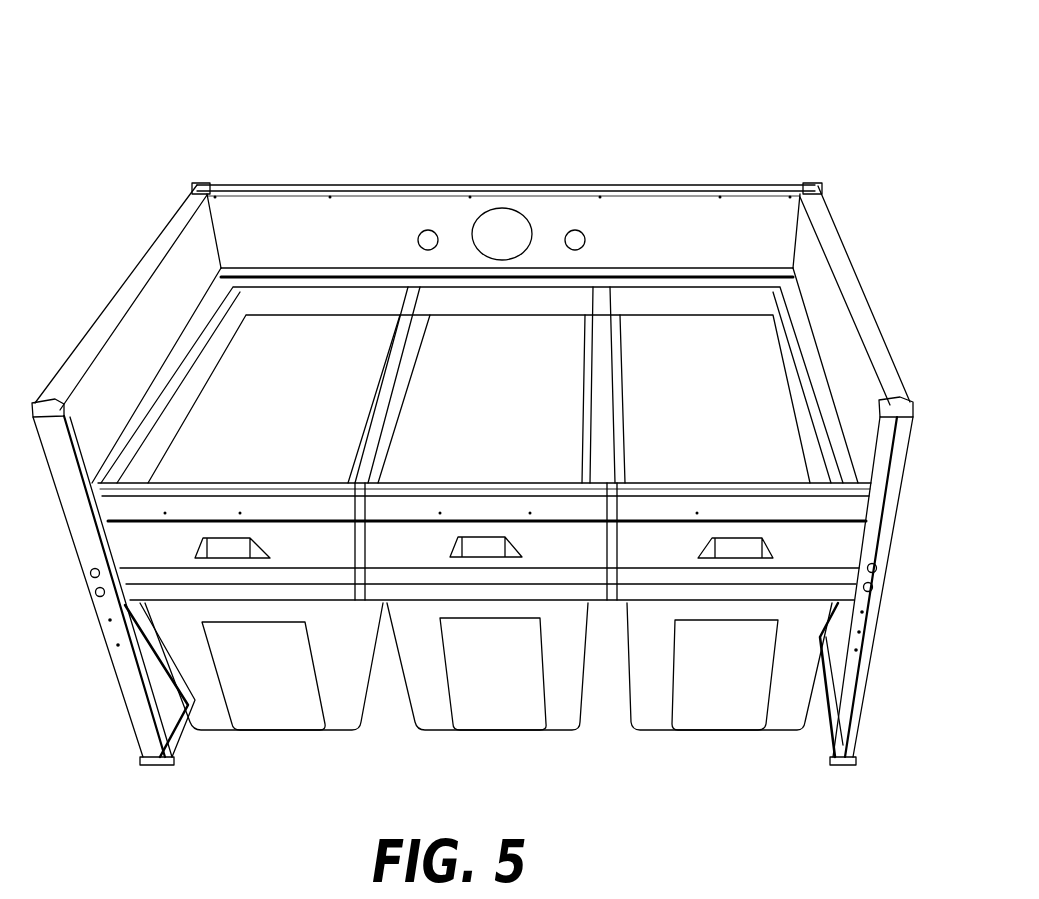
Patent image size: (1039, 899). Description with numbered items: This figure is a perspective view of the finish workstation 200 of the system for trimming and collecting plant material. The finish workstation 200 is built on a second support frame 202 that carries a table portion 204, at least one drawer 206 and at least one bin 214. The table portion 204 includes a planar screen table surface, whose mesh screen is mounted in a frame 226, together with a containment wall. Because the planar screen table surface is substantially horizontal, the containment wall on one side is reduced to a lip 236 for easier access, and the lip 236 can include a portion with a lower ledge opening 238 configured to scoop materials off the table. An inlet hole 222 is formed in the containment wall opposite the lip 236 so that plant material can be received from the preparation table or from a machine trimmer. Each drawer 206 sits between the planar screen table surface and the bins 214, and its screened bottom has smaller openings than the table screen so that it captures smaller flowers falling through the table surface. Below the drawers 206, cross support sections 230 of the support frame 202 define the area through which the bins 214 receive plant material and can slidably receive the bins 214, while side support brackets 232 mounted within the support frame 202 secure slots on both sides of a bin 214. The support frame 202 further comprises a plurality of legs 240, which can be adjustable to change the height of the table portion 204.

The finish workstation 200 is at (203, 78).
The second support frame 202 is at (70, 537).
The table portion 204 is at (130, 245).
The drawer 206 is at (580, 558).
The bin 214 is at (492, 722).
The inlet hole 222 is at (510, 220).
The frame 226 is at (797, 286).
The cross support section 230 is at (585, 383).
The side support bracket 232 is at (203, 397).
The lip 236 is at (857, 490).
The lower ledge opening 238 is at (406, 512).
The leg 240 is at (850, 673).